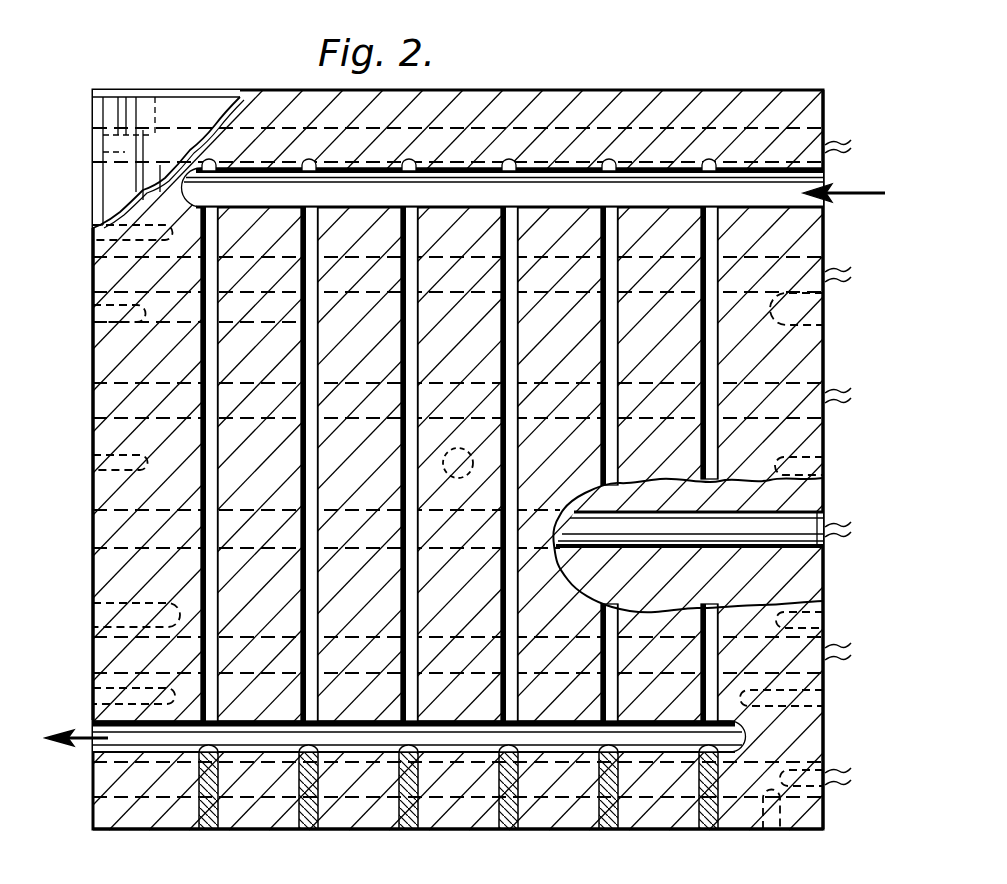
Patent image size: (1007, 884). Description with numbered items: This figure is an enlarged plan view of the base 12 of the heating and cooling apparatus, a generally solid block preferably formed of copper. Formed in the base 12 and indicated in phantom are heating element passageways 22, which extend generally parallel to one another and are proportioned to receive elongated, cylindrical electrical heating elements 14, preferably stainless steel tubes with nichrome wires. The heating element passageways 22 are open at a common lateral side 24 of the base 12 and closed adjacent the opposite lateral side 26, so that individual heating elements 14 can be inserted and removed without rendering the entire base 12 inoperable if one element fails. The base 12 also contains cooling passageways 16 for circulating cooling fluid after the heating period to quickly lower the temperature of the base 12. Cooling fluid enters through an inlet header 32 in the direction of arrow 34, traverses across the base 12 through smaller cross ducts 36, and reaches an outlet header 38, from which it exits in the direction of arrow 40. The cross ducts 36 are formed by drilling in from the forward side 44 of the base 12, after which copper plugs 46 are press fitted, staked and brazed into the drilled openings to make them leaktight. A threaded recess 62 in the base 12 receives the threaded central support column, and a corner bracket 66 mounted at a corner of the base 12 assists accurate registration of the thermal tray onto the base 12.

The base 12 is at (517, 80).
The electrical heating elements 14 is at (823, 430).
The cooling passageways 16 is at (735, 193).
The heating element passageways 22 is at (622, 128).
The common lateral side 24 is at (823, 350).
The opposite lateral side 26 is at (93, 343).
The inlet header 32 is at (672, 193).
The arrow 34 is at (849, 192).
The cross ducts 36 is at (297, 328).
The outlet header 38 is at (375, 742).
The arrow 40 is at (82, 744).
The forward side 44 is at (550, 832).
The copper plugs 46 is at (307, 830).
The threaded recess 62 is at (460, 449).
The corner brackets 66 is at (192, 90).